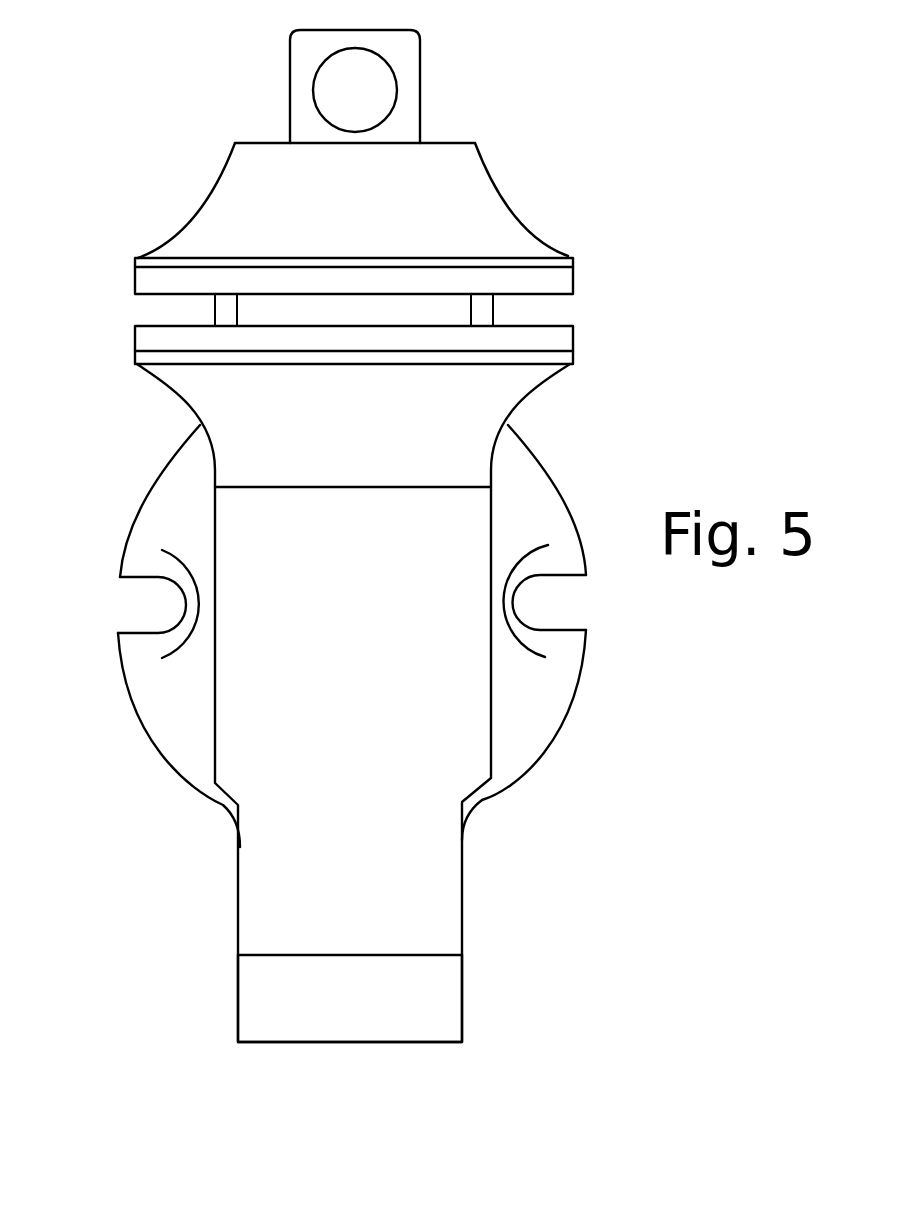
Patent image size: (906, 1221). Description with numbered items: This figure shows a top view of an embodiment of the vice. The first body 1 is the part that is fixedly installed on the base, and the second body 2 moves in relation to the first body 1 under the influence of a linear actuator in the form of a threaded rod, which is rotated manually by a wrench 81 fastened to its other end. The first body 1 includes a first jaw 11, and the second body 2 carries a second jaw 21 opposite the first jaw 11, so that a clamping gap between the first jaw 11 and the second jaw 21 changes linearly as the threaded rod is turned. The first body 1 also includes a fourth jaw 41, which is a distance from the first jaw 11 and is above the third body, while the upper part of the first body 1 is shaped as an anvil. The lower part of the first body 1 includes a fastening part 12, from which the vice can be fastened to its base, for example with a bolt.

The wrench 81 is at (345, 87).
The second body 2 is at (407, 205).
The second jaw 21 is at (533, 278).
The first jaw 11 is at (528, 340).
The first body 1 is at (445, 712).
The fastening part 12 is at (140, 568).
The fourth jaw 41 is at (397, 1027).